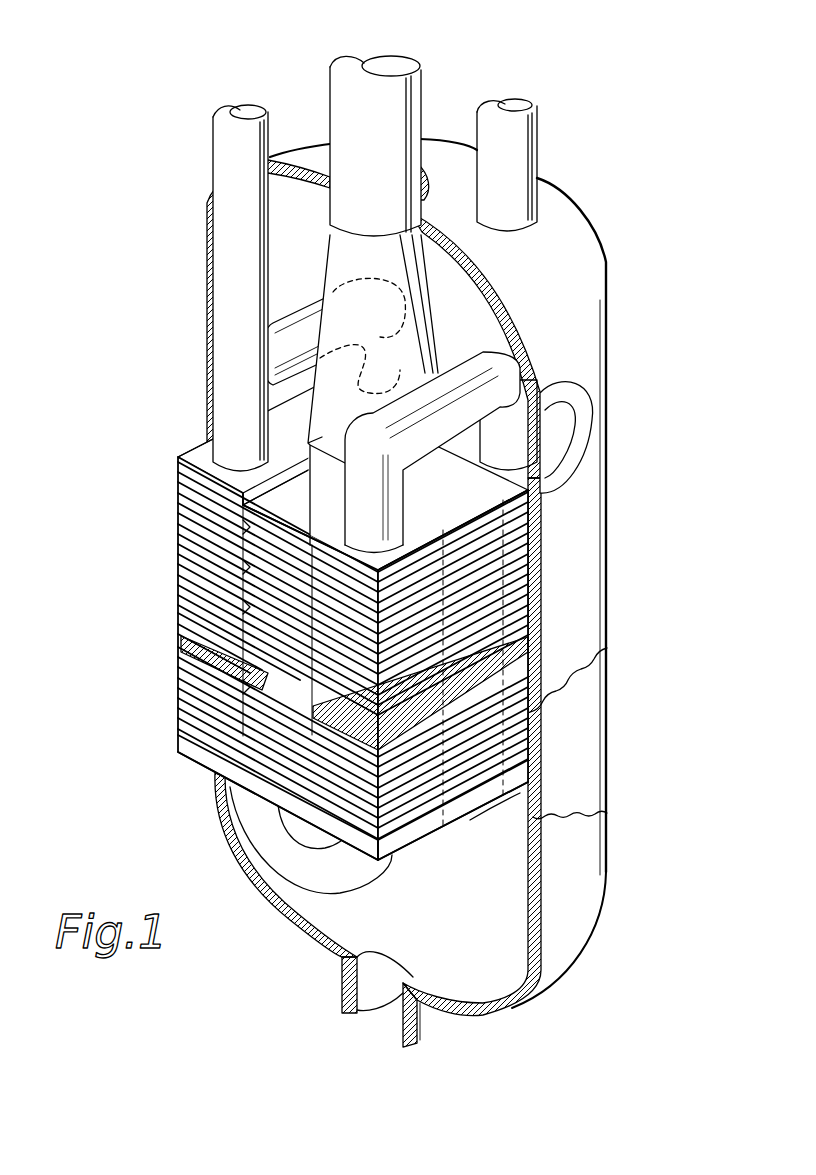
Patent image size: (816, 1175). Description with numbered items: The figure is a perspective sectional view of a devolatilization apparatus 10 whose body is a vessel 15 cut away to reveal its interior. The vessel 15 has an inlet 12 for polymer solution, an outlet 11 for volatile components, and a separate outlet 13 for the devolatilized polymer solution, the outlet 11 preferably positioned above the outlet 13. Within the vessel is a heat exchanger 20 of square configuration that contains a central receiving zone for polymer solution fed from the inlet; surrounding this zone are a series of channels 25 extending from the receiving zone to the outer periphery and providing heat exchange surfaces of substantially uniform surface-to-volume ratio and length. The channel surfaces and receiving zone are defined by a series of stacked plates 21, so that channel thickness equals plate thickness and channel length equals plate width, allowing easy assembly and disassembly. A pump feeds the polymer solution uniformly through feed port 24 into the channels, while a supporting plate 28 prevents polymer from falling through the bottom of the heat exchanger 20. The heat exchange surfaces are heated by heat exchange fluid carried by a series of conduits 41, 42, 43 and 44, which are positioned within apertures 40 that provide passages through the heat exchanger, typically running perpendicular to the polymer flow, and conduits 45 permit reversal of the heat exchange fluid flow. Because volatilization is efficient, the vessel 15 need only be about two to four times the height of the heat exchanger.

The apparatus 10 is at (480, 954).
The outlet for volatile components 11 is at (575, 450).
The inlet 12 is at (392, 325).
The outlet for devolatilized polymer solution 13 is at (348, 992).
The vessel 15 is at (597, 847).
The heat exchanger 20 is at (228, 483).
The stacked plates 21 is at (215, 698).
The feed port 24 is at (418, 62).
The channels 25 is at (267, 587).
The supporting plate 28 is at (200, 758).
The apertures 40 is at (413, 545).
The conduit 41 is at (540, 157).
The conduit 42 is at (213, 158).
The conduit 43 is at (420, 322).
The conduit 44 is at (345, 503).
The conduits 45 is at (247, 828).